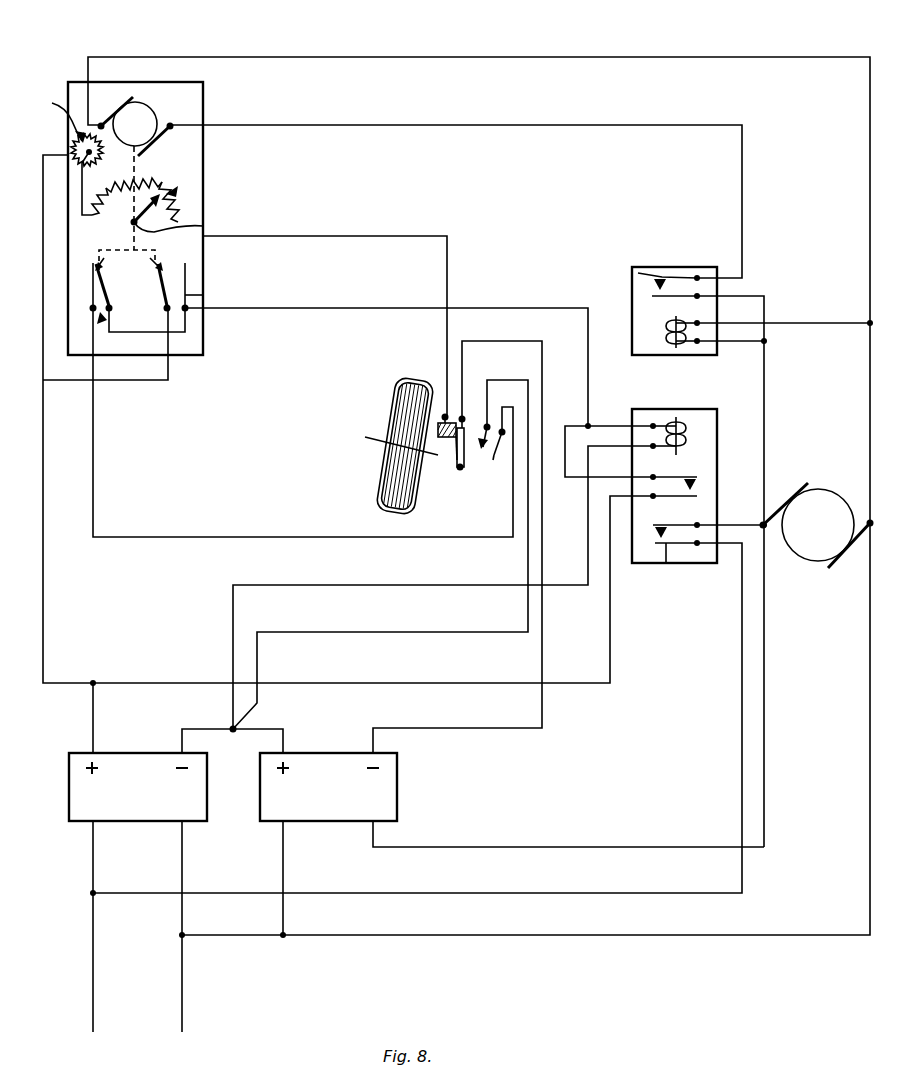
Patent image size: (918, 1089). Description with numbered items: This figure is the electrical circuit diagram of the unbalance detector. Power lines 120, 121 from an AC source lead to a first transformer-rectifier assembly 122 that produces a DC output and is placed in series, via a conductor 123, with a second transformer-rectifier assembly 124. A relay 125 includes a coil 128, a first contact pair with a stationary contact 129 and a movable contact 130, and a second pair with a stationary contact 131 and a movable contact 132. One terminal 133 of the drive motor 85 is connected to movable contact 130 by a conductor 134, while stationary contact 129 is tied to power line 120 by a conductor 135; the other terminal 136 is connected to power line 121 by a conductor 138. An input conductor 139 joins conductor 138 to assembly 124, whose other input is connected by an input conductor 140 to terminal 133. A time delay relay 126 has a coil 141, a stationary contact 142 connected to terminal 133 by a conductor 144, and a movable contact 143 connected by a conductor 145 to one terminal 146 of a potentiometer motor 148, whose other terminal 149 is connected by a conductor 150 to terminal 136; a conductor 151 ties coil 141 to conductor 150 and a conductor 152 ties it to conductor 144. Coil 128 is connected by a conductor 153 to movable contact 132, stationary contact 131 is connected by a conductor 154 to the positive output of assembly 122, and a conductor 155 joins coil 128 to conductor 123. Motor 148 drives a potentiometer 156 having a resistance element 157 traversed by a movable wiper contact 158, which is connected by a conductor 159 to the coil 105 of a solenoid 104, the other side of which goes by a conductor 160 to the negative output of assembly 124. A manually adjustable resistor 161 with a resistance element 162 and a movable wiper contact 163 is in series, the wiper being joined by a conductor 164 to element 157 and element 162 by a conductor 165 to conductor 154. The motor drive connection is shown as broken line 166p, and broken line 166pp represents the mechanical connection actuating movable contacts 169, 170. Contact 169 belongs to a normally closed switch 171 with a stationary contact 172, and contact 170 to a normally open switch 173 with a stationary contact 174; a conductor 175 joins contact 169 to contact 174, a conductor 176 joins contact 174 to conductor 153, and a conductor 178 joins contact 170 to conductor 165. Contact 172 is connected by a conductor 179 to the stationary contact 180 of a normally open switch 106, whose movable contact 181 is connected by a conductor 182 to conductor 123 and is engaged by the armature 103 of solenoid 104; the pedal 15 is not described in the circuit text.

The accelerator pedal 15 is at (374, 477).
The drive motor 85 is at (850, 492).
The armature 103 is at (466, 450).
The solenoid 104 is at (445, 447).
The coil 105 is at (446, 457).
The normally open switch 106 is at (491, 456).
The power line 120 is at (93, 1000).
The power line 121 is at (182, 1000).
The first transformer-rectifier assembly 122 is at (154, 755).
The conductor 123 is at (266, 732).
The second transformer-rectifier assembly 124 is at (344, 755).
The relay 125 is at (683, 570).
The time delay relay 126 is at (665, 258).
The coil 128 is at (690, 436).
The stationary contact 129 is at (666, 564).
The movable contact 130 is at (678, 524).
The stationary contact 131 is at (672, 498).
The movable contact 132 is at (680, 476).
The terminal 133 is at (766, 532).
The conductor 134 is at (754, 528).
The conductor 135 is at (742, 715).
The terminal 136 is at (862, 534).
The conductor 138 is at (870, 790).
The input conductor 139 is at (283, 866).
The input conductor 140 is at (565, 847).
The coil 141 is at (658, 324).
The stationary contact 142 is at (650, 296).
The movable contact 143 is at (636, 274).
The conductor 144 is at (776, 316).
The conductor 145 is at (554, 124).
The terminal 146 is at (170, 123).
The potentiometer motor 148 is at (150, 114).
The terminal 149 is at (101, 121).
The conductor 150 is at (465, 57).
The conductor 151 is at (813, 323).
The conductor 152 is at (736, 344).
The conductor 153 is at (610, 426).
The conductor 154 is at (93, 692).
The conductor 155 is at (383, 585).
The potentiometer 156 is at (173, 190).
The resistance element 157 is at (162, 182).
The movable wiper contact 158 is at (186, 214).
The conductor 159 is at (368, 236).
The conductor 160 is at (526, 341).
The manually adjustable resistor 161 is at (54, 104).
The resistance element 162 is at (72, 142).
The movable wiper contact 163 is at (121, 182).
The conductor 164 is at (78, 204).
The conductor 165 is at (43, 583).
The drive connection 166p is at (115, 202).
The mechanical connection 166pp is at (129, 261).
The movable contact 169 is at (109, 294).
The movable contact 170 is at (160, 279).
The normally closed switch 171 is at (101, 320).
The stationary contact 172 is at (92, 316).
The normally open switch 173 is at (196, 278).
The stationary contact 174 is at (203, 293).
The conductor 175 is at (157, 332).
The conductor 176 is at (364, 306).
The conductor 178 is at (146, 380).
The conductor 179 is at (202, 537).
The stationary contact 180 is at (490, 429).
The movable contact 181 is at (484, 420).
The conductor 182 is at (378, 632).